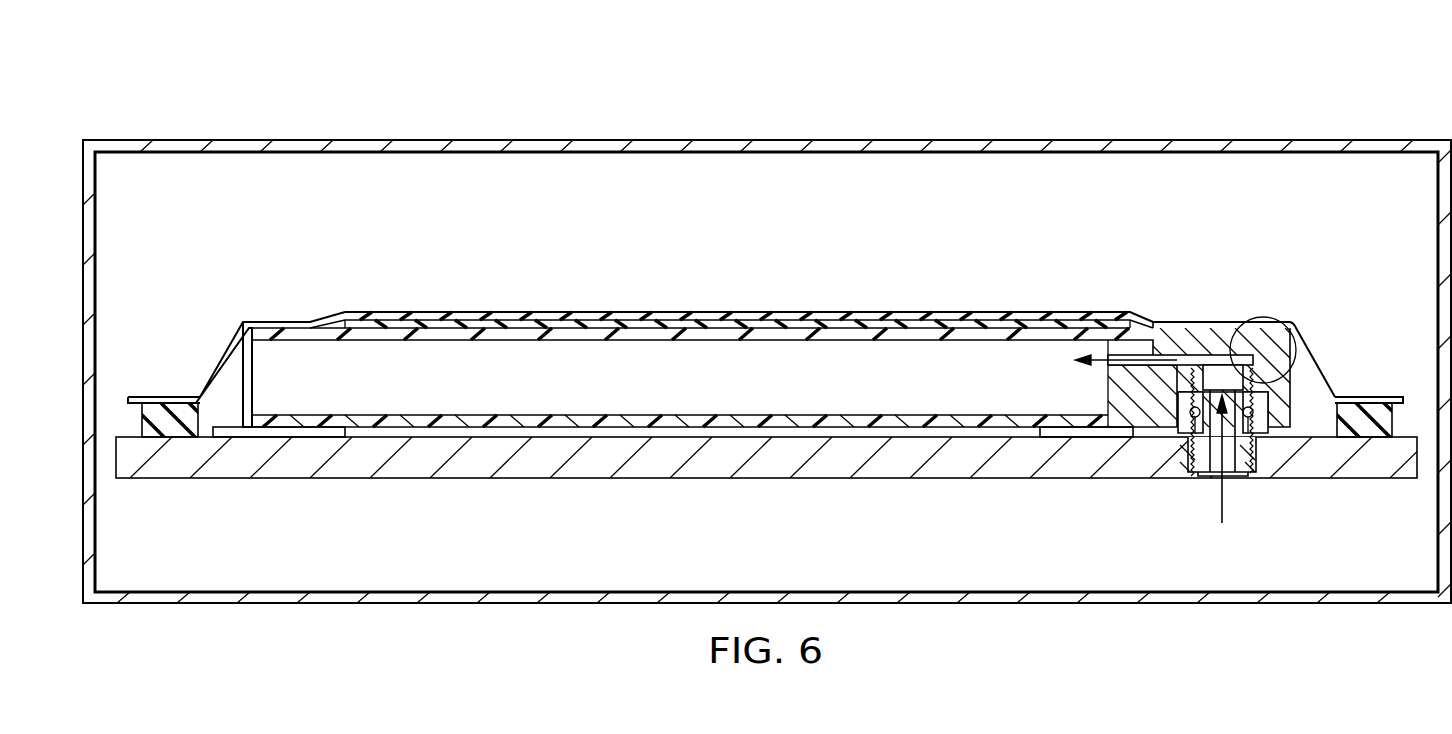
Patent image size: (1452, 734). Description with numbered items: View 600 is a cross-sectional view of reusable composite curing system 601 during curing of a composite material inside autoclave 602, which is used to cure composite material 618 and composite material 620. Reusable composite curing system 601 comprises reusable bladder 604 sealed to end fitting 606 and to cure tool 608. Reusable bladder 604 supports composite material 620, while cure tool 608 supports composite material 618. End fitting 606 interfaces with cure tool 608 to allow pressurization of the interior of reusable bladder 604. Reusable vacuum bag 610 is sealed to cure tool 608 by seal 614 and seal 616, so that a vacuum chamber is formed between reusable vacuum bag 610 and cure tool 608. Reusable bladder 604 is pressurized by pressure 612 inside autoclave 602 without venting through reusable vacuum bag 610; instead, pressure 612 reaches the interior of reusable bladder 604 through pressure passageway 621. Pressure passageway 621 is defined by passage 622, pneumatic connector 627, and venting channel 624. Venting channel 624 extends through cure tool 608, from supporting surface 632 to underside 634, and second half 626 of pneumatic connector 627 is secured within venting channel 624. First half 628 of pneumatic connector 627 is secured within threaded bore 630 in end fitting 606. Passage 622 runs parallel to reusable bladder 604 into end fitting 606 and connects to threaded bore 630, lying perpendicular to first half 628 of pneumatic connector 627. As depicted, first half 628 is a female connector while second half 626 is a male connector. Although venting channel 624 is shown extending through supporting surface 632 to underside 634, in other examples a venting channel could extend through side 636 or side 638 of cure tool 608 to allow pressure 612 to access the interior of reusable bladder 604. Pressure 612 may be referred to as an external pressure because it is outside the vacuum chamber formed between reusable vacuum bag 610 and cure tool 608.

The view 600 is at (538, 88).
The reusable composite curing system 601 is at (1084, 249).
The autoclave 602 is at (1085, 140).
The reusable bladder 604 is at (498, 335).
The end fitting 606 is at (1108, 386).
The cure tool 608 is at (702, 470).
The reusable vacuum bag 610 is at (907, 318).
The pressure 612 is at (785, 192).
The seal 614 is at (130, 398).
The seal 616 is at (1398, 402).
The composite material 618 is at (867, 432).
The composite material 620 is at (708, 328).
The pressure passageway 621 is at (1222, 500).
The passage 622 is at (1210, 356).
The venting channel 624 is at (1232, 478).
The second half of pneumatic connector 626 is at (1262, 455).
The pneumatic connector 627 is at (1151, 456).
The first half of pneumatic connector 628 is at (1236, 372).
The threaded bore 630 is at (1300, 352).
The supporting surface 632 is at (318, 428).
The underside 634 is at (522, 478).
The side 636 is at (118, 478).
The side 638 is at (1418, 478).